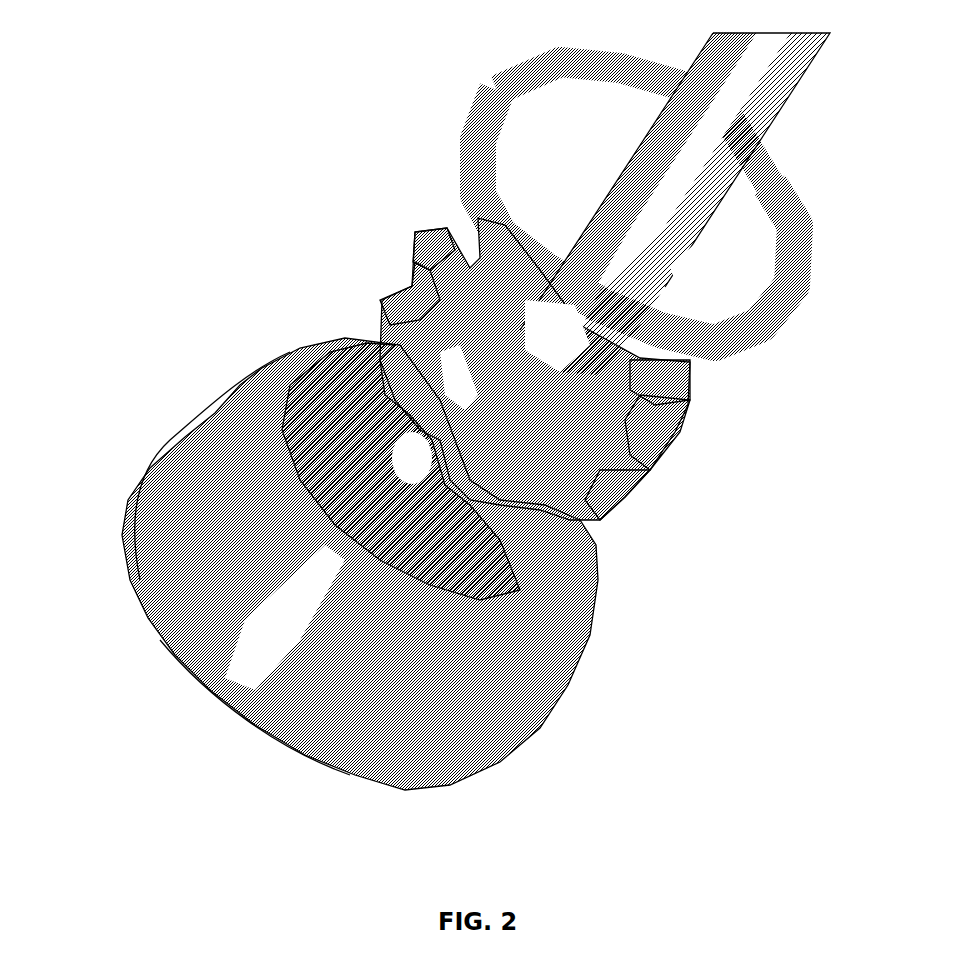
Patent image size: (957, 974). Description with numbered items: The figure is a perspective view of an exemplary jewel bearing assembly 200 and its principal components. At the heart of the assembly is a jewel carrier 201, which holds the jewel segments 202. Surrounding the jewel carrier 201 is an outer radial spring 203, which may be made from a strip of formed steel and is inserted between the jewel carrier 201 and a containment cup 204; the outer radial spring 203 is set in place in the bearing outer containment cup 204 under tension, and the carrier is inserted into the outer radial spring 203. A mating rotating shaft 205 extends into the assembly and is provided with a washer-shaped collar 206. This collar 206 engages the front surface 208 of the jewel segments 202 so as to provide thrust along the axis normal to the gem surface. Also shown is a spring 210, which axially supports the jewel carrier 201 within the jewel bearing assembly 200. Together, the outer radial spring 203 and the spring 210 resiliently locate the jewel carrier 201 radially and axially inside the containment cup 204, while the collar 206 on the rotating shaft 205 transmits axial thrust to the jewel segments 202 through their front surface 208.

The jewel bearing assembly 200 is at (461, 411).
The jewel carrier 201 is at (552, 335).
The jewel segments 202 is at (465, 414).
The outer radial spring 203 is at (567, 123).
The containment cup 204 is at (388, 564).
The rotating shaft 205 is at (700, 204).
The collar 206 is at (601, 216).
The front surface 208 is at (723, 386).
The spring 210 is at (538, 428).